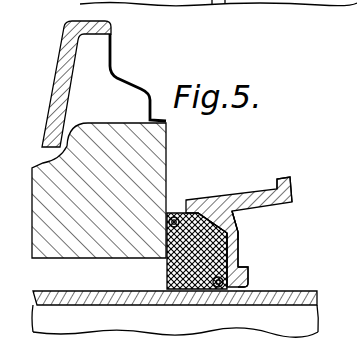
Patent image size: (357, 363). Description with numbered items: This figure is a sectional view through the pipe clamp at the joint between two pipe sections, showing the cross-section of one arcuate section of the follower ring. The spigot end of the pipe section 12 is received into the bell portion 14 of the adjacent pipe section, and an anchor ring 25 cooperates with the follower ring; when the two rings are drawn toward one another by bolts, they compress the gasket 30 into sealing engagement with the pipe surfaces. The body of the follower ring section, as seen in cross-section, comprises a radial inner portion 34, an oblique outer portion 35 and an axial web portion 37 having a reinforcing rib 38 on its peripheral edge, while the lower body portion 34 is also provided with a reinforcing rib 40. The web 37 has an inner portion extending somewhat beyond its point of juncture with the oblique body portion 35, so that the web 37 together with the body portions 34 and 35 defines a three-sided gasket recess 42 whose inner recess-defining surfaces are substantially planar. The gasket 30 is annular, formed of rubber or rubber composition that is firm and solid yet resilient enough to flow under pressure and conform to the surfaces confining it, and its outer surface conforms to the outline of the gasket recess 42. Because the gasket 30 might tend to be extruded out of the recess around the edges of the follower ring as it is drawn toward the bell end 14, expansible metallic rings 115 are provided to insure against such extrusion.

The pipe section 12 is at (308, 291).
The bell portion 14 is at (43, 163).
The anchor ring 25 is at (68, 33).
The gasket 30 is at (168, 272).
The radial inner portion 34 is at (240, 260).
The oblique outer portion 35 is at (229, 218).
The axial web portion 37 is at (248, 198).
The reinforcing rib 38 is at (290, 177).
The reinforcing rib 40 is at (248, 282).
The gasket recess 42 is at (231, 231).
The expansible metallic rings 115 is at (175, 217).